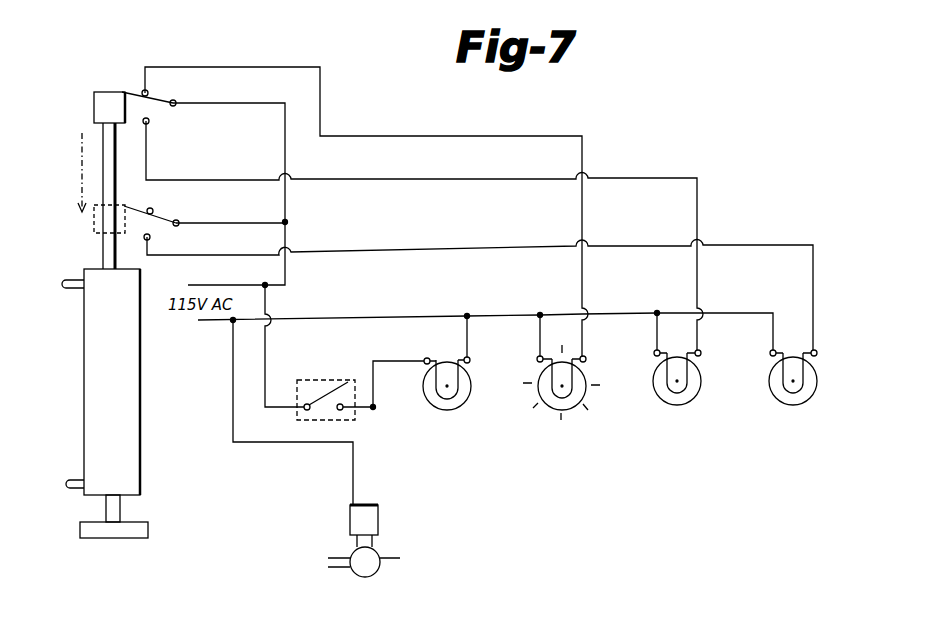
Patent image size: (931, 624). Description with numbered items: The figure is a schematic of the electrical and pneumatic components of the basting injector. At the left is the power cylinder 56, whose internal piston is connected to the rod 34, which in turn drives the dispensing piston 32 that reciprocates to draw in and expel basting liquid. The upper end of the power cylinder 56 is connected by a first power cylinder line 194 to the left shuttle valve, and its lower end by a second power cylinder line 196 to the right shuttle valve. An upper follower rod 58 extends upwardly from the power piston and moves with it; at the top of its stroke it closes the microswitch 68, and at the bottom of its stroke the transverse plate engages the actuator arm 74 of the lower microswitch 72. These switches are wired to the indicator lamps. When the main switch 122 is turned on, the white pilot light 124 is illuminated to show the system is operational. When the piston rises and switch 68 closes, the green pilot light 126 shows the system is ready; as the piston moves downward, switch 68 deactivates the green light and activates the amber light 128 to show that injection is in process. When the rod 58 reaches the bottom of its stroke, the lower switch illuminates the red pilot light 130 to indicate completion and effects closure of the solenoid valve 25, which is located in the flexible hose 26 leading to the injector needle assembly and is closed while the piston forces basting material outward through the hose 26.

The microswitch 68 is at (172, 93).
The upper follower rod 58 is at (105, 152).
The actuator arm 74 is at (170, 218).
The lower microswitch 72 is at (166, 228).
The first power cylinder line 194 is at (66, 281).
The power cylinder 56 is at (133, 400).
The second power cylinder line 196 is at (80, 488).
The rod 34 is at (118, 507).
The dispensing piston 32 is at (137, 533).
The main switch 122 is at (318, 412).
The solenoid valve 25 is at (378, 545).
The flexible hose 26 is at (382, 567).
The white pilot light 124 is at (460, 397).
The green pilot light 126 is at (585, 378).
The amber light 128 is at (708, 362).
The red pilot light 130 is at (812, 389).